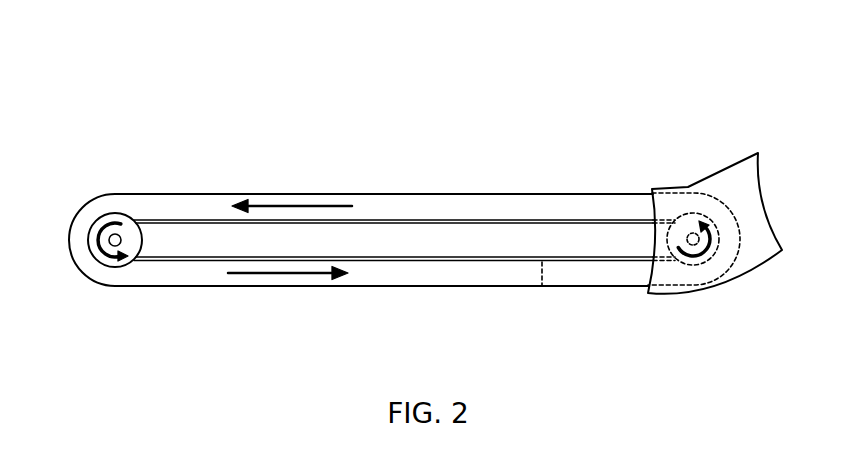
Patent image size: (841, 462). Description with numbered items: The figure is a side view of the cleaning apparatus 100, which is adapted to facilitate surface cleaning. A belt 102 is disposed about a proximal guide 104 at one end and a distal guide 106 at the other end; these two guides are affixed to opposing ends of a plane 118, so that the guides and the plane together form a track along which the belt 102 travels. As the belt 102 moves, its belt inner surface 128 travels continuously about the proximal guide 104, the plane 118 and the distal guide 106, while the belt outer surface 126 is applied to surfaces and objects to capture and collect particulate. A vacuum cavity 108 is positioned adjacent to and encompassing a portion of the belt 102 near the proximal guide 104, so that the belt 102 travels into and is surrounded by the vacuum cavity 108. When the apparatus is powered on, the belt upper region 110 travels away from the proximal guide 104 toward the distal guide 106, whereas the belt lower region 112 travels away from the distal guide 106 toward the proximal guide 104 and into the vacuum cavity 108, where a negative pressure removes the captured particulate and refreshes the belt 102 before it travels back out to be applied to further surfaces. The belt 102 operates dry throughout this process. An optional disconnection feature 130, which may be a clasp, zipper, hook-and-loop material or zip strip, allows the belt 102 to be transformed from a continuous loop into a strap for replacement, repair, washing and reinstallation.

The cleaning apparatus 100 is at (557, 115).
The belt 102 is at (452, 193).
The proximal guide 104 is at (685, 262).
The distal guide 106 is at (143, 237).
The vacuum cavity 108 is at (733, 165).
The belt upper region 110 is at (558, 208).
The belt lower region 112 is at (207, 273).
The plane 118 is at (463, 243).
The belt outer surface 126 is at (323, 193).
The belt inner surface 128 is at (422, 217).
The disconnection feature 130 is at (540, 273).